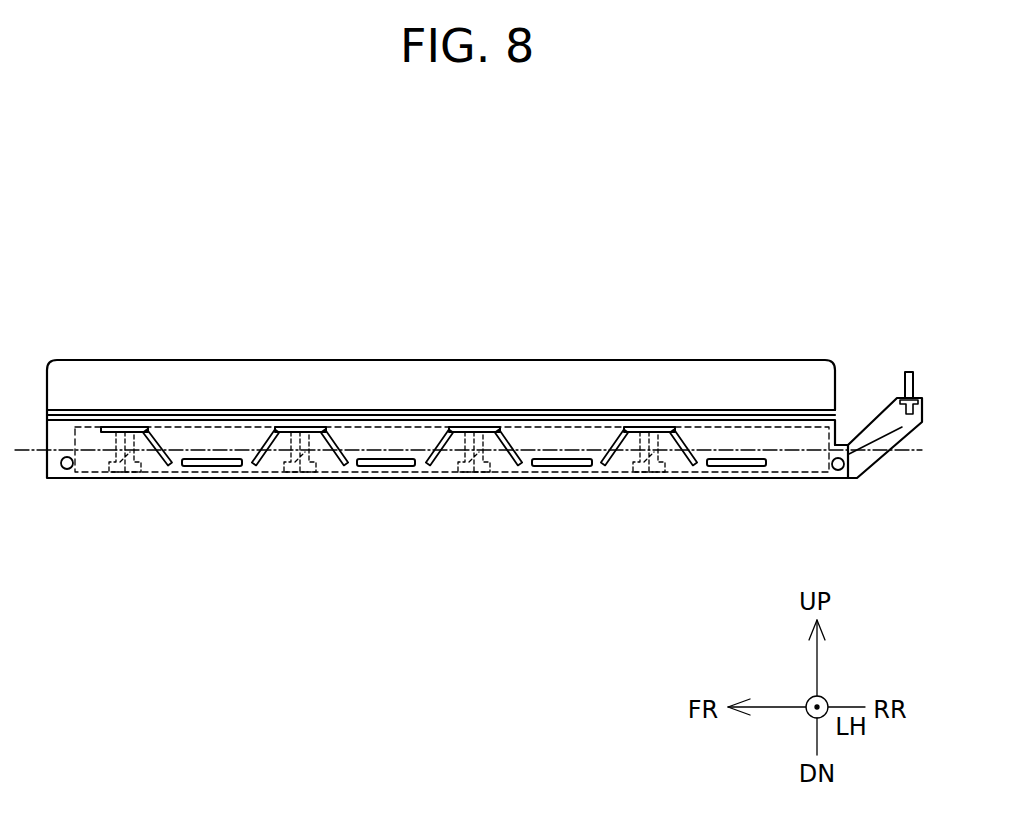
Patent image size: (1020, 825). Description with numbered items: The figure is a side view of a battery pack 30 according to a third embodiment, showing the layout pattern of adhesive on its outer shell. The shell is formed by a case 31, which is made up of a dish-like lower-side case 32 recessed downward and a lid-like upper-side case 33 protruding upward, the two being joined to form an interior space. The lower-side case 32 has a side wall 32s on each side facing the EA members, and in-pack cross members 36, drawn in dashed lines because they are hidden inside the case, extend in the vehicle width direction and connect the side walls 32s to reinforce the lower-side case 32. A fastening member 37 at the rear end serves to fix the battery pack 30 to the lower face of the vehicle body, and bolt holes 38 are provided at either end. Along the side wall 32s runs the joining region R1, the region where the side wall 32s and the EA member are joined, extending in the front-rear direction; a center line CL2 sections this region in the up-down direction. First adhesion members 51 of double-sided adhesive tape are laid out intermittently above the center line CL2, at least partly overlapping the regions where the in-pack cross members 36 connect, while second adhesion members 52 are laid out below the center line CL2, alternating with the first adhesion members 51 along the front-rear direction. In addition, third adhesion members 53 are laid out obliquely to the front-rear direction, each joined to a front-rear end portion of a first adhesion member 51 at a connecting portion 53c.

The battery pack 30 is at (815, 226).
The case 31 is at (8, 273).
The lower-side case 32 is at (45, 445).
The side wall 32s is at (793, 479).
The upper-side case 33 is at (45, 404).
The in-pack cross member 36 is at (122, 473).
The fastening member 37 is at (908, 372).
The bolt hole 38 is at (67, 470).
The first adhesion member 51 is at (107, 428).
The second adhesion member 52 is at (209, 467).
The third adhesion member 53 is at (172, 478).
The connecting portion 53c is at (152, 427).
The joining region R1 is at (813, 479).
The center line CL2 is at (27, 452).